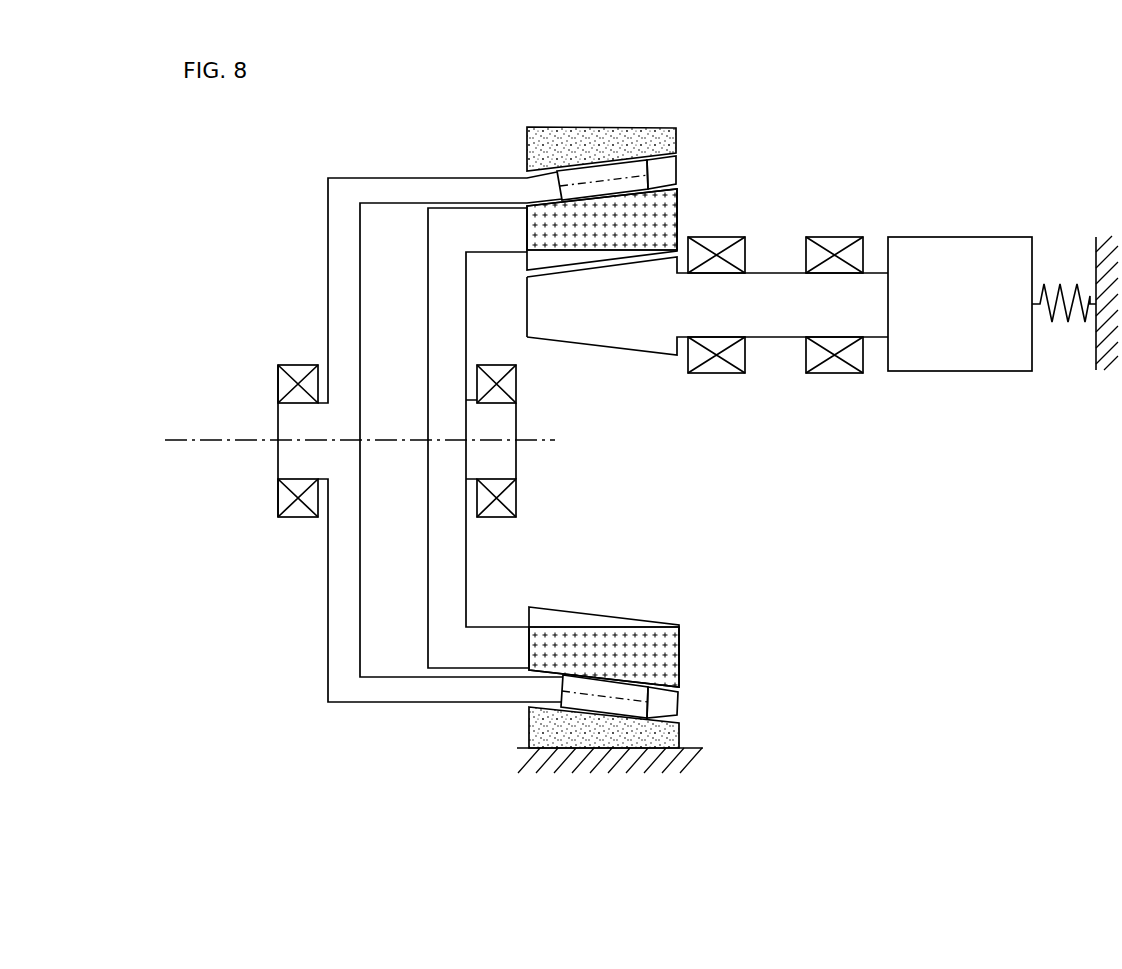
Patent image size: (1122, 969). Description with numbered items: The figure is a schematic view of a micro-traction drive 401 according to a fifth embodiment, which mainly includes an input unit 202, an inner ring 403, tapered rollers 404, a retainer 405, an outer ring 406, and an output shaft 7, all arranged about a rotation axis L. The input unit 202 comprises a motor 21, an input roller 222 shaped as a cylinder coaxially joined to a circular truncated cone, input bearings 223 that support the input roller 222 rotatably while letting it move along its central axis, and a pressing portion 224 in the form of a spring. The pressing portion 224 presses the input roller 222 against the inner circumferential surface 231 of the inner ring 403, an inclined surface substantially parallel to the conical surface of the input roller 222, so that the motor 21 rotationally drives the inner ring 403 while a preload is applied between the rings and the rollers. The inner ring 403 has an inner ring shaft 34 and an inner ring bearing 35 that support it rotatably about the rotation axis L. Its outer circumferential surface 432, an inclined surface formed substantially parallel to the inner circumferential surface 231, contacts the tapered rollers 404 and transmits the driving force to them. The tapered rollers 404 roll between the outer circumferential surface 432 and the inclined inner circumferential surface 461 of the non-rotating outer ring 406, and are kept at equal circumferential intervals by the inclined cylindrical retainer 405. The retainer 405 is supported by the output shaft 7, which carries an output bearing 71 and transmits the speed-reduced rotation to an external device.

The micro-traction drive 401 is at (116, 136).
The rotation axis L is at (202, 440).
The output shaft 7 is at (328, 285).
The output bearing 71 is at (285, 497).
The inner ring shaft 34 is at (458, 561).
The inner ring bearing 35 is at (520, 497).
The inner circumferential surface 461 is at (607, 169).
The outer circumferential surface 432 is at (579, 210).
The inner circumferential surface 231 is at (636, 253).
The input roller 222 is at (623, 344).
The input bearing 223 is at (717, 369).
The motor 21 is at (952, 238).
The input unit 202 is at (874, 204).
The pressing portion 224 is at (1075, 312).
The inner ring 403 is at (693, 630).
The retainer 405 is at (673, 705).
The outer ring 406 is at (695, 735).
The tapered rollers 404 is at (618, 705).